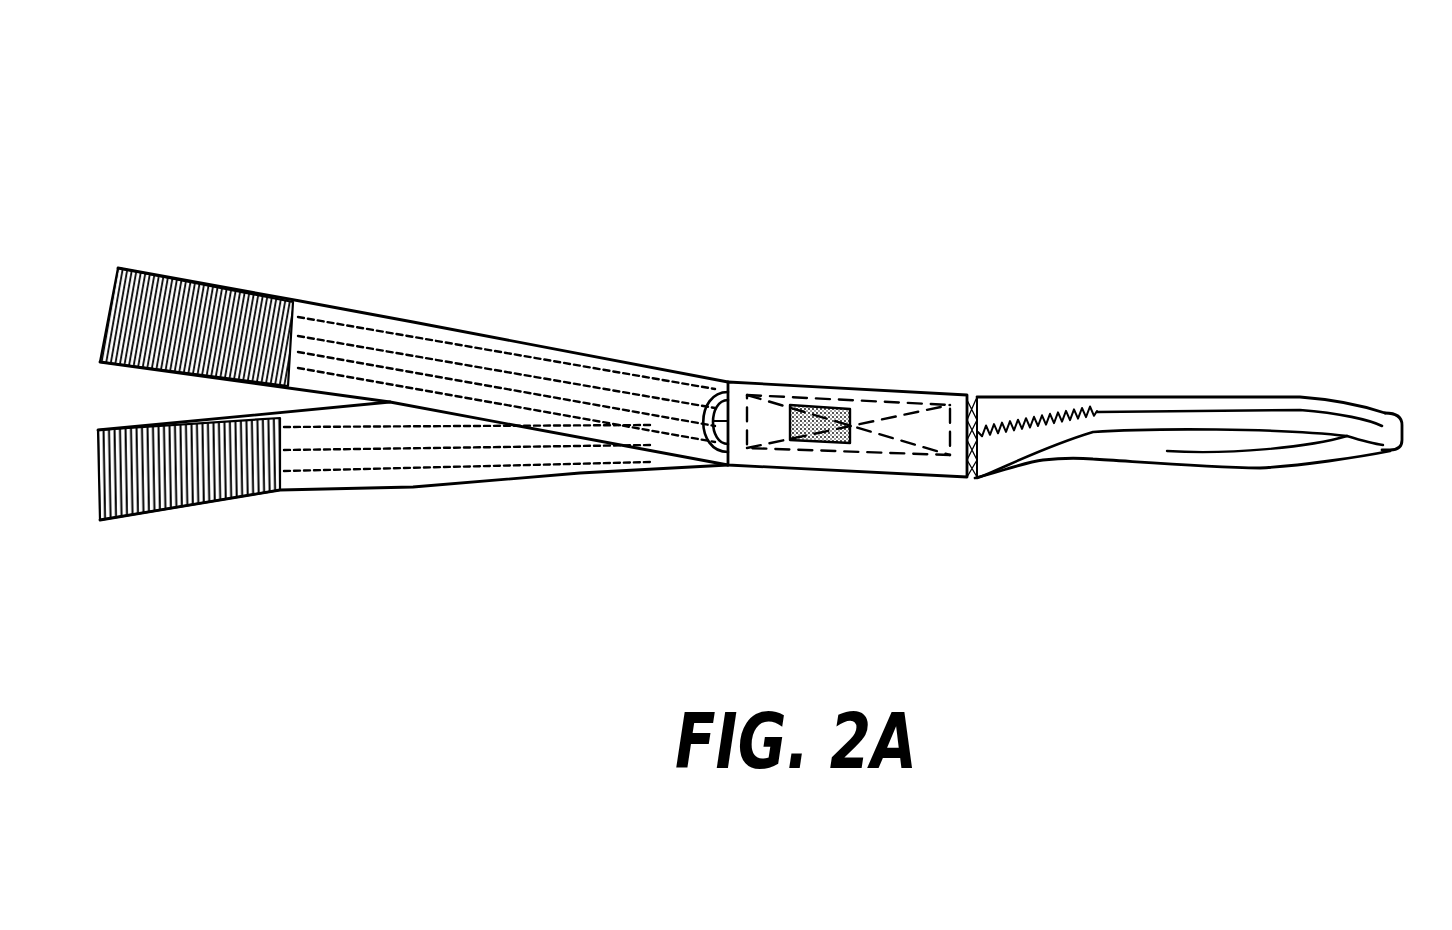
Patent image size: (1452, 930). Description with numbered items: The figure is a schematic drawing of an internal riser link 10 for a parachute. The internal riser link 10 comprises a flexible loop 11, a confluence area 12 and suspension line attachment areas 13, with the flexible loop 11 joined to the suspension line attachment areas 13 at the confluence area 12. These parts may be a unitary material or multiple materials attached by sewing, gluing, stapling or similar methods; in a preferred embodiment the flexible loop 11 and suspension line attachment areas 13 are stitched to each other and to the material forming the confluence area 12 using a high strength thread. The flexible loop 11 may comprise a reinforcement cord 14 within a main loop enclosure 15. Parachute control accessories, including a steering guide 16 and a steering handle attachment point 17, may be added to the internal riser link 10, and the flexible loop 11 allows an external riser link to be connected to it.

The internal riser link 10 is at (655, 165).
The flexible loop 11 is at (1245, 397).
The confluence area 12 is at (947, 393).
The suspension line attachment areas 13 is at (266, 300).
The reinforcement cord 14 is at (1386, 413).
The main loop enclosure 15 is at (1180, 469).
The steering guide 16 is at (720, 392).
The steering handle attachment point 17 is at (817, 403).